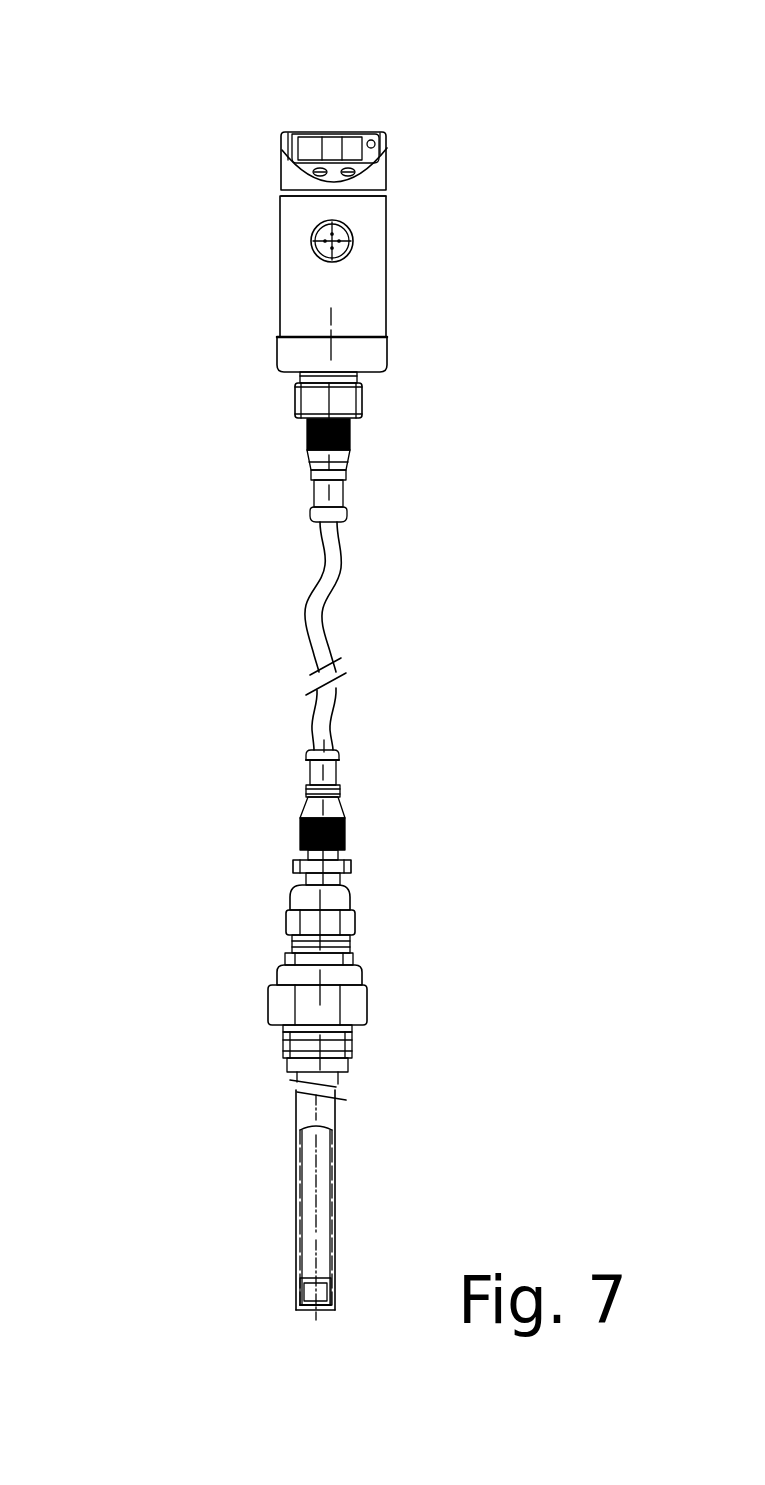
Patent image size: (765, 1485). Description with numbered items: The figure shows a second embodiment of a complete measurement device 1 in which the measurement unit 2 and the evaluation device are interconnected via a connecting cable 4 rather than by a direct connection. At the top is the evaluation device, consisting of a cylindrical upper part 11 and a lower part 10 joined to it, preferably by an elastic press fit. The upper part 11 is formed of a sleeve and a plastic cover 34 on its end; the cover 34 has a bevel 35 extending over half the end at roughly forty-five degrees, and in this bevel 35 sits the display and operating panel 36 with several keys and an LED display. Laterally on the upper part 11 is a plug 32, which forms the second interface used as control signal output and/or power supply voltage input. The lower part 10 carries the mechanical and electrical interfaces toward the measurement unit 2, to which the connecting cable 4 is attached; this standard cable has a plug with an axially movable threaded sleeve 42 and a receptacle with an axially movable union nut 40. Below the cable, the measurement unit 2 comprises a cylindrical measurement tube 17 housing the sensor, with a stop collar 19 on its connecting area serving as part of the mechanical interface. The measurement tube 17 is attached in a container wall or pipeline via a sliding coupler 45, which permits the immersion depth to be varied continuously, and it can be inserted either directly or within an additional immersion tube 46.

The measurement device 1 is at (170, 134).
The measurement unit 2 is at (203, 1002).
The connecting cable 4 is at (337, 562).
The lower part 10 is at (387, 350).
The upper part 11 is at (387, 257).
The measurement tube 17 is at (303, 1203).
The stop collar 19 is at (340, 867).
The plug 32 is at (315, 255).
The cover 34 is at (385, 170).
The bevel 35 is at (290, 156).
The display and operating panel 36 is at (359, 122).
The union nut 40 is at (300, 827).
The threaded sleeve 42 is at (306, 435).
The sliding coupler 45 is at (345, 1005).
The immersion tube 46 is at (335, 1162).